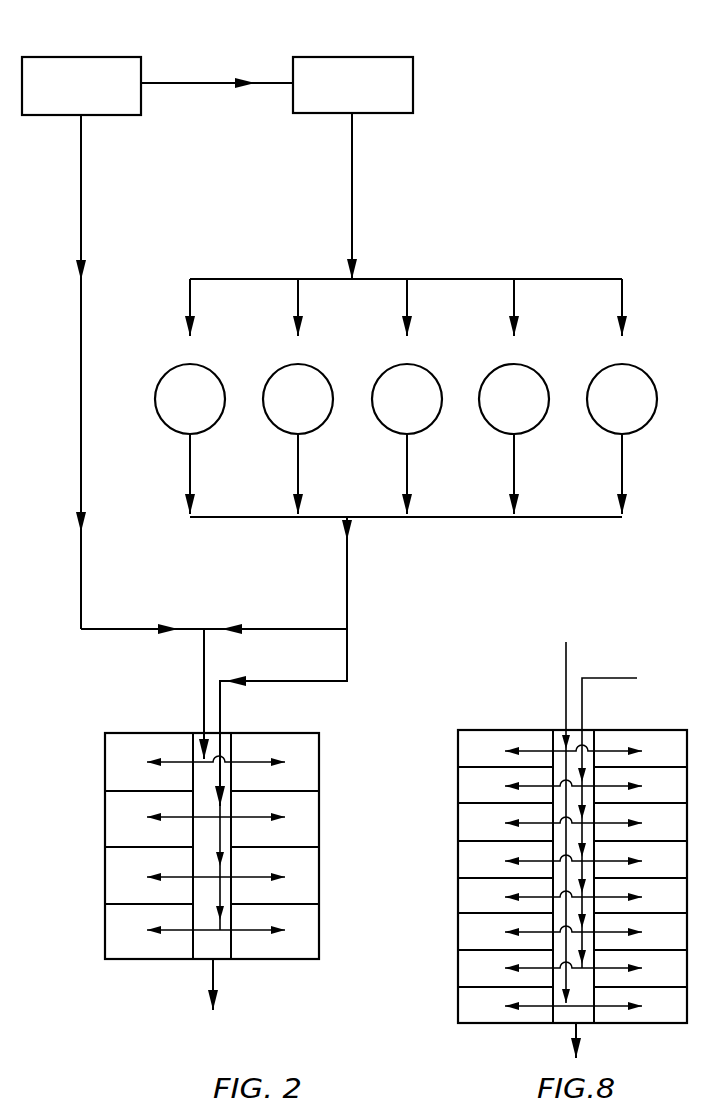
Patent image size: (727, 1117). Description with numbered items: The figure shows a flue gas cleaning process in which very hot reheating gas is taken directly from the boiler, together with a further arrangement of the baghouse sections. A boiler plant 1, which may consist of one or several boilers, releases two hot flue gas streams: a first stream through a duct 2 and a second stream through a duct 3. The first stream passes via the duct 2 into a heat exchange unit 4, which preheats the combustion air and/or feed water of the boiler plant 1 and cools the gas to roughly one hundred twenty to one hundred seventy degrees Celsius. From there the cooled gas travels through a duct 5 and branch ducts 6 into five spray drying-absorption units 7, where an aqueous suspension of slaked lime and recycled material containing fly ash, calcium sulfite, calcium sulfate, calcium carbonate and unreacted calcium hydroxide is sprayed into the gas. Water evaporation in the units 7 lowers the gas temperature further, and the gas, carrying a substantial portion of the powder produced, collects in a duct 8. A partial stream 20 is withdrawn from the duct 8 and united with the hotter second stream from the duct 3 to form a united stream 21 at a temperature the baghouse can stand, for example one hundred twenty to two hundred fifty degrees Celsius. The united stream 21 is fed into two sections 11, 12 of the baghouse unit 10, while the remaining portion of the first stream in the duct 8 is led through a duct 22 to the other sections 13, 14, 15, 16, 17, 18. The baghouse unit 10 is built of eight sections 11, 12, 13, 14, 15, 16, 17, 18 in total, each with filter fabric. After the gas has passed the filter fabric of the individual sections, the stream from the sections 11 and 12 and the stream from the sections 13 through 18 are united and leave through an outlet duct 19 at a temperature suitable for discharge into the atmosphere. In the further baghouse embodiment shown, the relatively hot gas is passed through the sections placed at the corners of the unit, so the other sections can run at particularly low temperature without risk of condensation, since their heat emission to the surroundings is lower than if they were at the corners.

In FIG. 2, the boiler plant 1 is at (95, 57).
In FIG. 2, the duct 2 is at (205, 80).
In FIG. 2, the duct 3 is at (81, 192).
In FIG. 2, the heat exchange unit 4 is at (355, 57).
In FIG. 2, the duct 5 is at (352, 176).
In FIG. 2, the duct 6 is at (190, 308).
In FIG. 2, the spray drying-absorption unit 7 is at (208, 422).
In FIG. 2, the duct 8 is at (347, 566).
In FIG. 2, the baghouse unit 10 is at (320, 842).
In FIG. 2, the section 11 is at (105, 760).
In FIG. 2, the section 12 is at (322, 763).
In FIG. 2, the section 13 is at (105, 815).
In FIG. 2, the section 14 is at (322, 820).
In FIG. 2, the section 15 is at (105, 868).
In FIG. 2, the section 16 is at (322, 875).
In FIG. 2, the section 17 is at (105, 921).
In FIG. 2, the section 18 is at (322, 930).
In FIG. 2, the outlet duct 19 is at (215, 980).
In FIG. 8, the outlet duct 19 is at (578, 1030).
In FIG. 2, the partial stream 20 is at (268, 629).
In FIG. 2, the united stream 21 is at (204, 660).
In FIG. 8, the united stream 21 is at (566, 663).
In FIG. 2, the duct 22 is at (268, 681).
In FIG. 8, the duct 22 is at (617, 677).